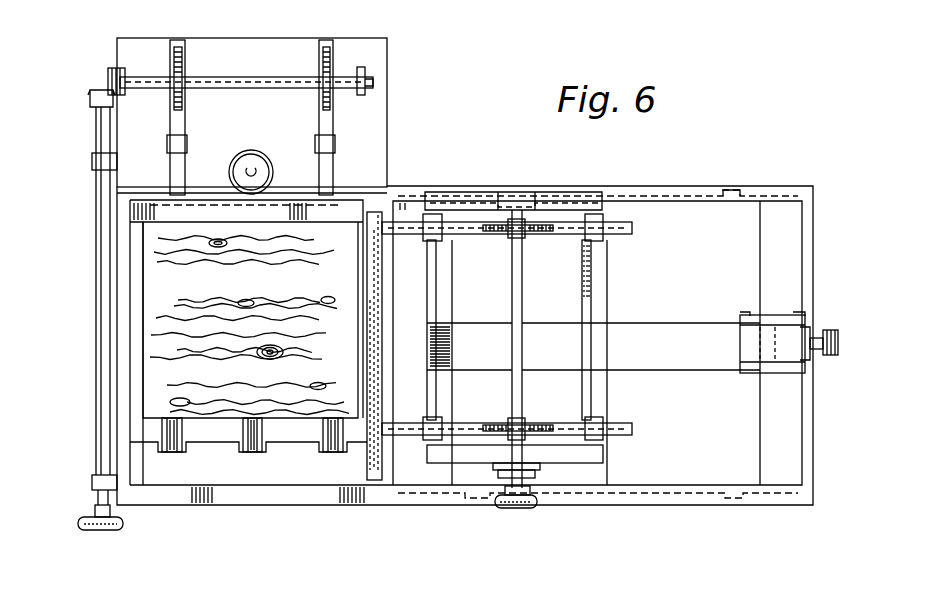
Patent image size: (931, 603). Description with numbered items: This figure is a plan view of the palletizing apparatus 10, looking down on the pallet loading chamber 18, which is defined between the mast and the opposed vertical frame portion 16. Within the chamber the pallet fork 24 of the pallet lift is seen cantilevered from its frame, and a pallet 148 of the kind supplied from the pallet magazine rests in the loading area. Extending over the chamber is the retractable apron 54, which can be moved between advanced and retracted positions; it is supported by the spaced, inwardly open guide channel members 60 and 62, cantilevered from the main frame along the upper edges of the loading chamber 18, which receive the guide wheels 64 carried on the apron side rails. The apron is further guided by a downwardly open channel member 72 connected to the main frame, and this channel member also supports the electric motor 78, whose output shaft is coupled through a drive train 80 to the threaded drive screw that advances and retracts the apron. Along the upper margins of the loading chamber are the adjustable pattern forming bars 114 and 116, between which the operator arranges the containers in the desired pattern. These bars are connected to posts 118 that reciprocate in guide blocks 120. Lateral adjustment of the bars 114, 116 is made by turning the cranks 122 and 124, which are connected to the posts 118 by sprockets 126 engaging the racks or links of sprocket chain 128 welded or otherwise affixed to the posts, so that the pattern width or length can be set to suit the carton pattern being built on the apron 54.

The palletizing apparatus 10 is at (458, 87).
The vertical frame portion 16 is at (273, 495).
The pallet loading chamber 18 is at (230, 477).
The pallet fork 24 is at (250, 447).
The retractable apron 54 is at (750, 420).
The guide channel member 60 is at (680, 498).
The guide channel member 62 is at (659, 191).
The guide wheels 64 is at (740, 186).
The downwardly open channel member 72 is at (662, 326).
The electric motor 78 is at (748, 373).
The drive train 80 is at (838, 341).
The pattern forming bar 114 is at (357, 205).
The pattern forming bar 116 is at (375, 458).
The posts 118 is at (170, 163).
The guide blocks 120 is at (167, 141).
The crank 122 is at (523, 504).
The crank 124 is at (80, 524).
The sprockets 126 is at (182, 75).
The racks or links of sprocket chain 128 is at (186, 46).
The pallets 148 is at (152, 333).